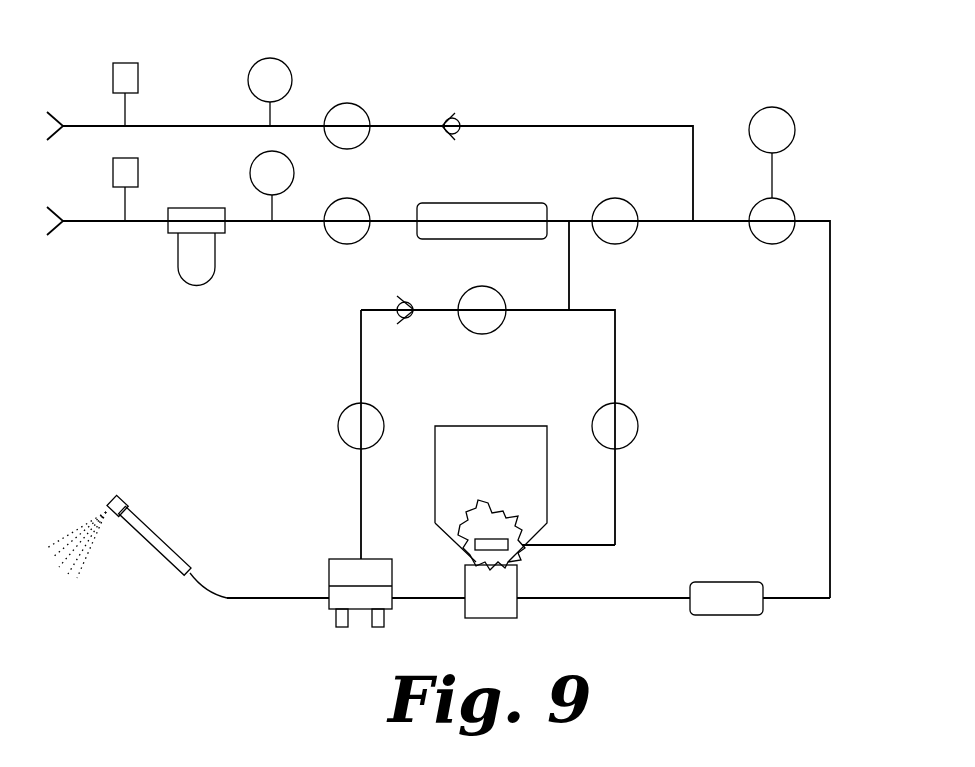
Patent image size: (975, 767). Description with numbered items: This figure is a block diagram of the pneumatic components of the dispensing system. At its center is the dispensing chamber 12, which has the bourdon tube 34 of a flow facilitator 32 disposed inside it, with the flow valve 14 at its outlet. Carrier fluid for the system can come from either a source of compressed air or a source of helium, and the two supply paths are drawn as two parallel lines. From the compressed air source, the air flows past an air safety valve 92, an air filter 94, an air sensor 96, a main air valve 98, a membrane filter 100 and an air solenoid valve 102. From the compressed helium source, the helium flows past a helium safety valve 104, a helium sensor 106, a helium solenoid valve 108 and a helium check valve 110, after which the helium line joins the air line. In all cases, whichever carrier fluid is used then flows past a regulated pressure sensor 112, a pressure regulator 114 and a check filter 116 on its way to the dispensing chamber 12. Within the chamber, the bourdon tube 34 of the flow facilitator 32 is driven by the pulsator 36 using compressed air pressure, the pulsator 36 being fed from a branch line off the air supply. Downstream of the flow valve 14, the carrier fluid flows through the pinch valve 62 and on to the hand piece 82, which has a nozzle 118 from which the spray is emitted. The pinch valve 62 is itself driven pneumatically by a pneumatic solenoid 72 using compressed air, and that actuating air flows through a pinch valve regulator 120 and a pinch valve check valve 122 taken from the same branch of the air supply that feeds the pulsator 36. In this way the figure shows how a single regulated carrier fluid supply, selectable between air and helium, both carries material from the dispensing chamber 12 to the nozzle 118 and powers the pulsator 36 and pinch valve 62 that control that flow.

The dispensing chamber 12 is at (493, 420).
The flow valve 14 is at (520, 612).
The flow facilitator 32 is at (618, 502).
The bourdon tube 34 is at (482, 513).
The pulsator 36 is at (636, 418).
The pinch valve 62 is at (327, 566).
The pneumatic solenoid 72 is at (340, 415).
The hand piece 82 is at (172, 565).
The air safety valve 92 is at (113, 173).
The air filter 94 is at (215, 248).
The air sensor 96 is at (253, 162).
The main air valve 98 is at (360, 200).
The membrane filter 100 is at (490, 203).
The air solenoid valve 102 is at (630, 238).
The helium safety valve 104 is at (138, 72).
The helium sensor 106 is at (290, 66).
The helium solenoid valve 108 is at (347, 103).
The helium check valve 110 is at (458, 118).
The regulated pressure sensor 112 is at (793, 120).
The pressure regulator 114 is at (772, 244).
The check filter 116 is at (720, 615).
The nozzle 118 is at (115, 503).
The pinch valve regulator 120 is at (497, 331).
The pinch valve check valve 122 is at (396, 300).